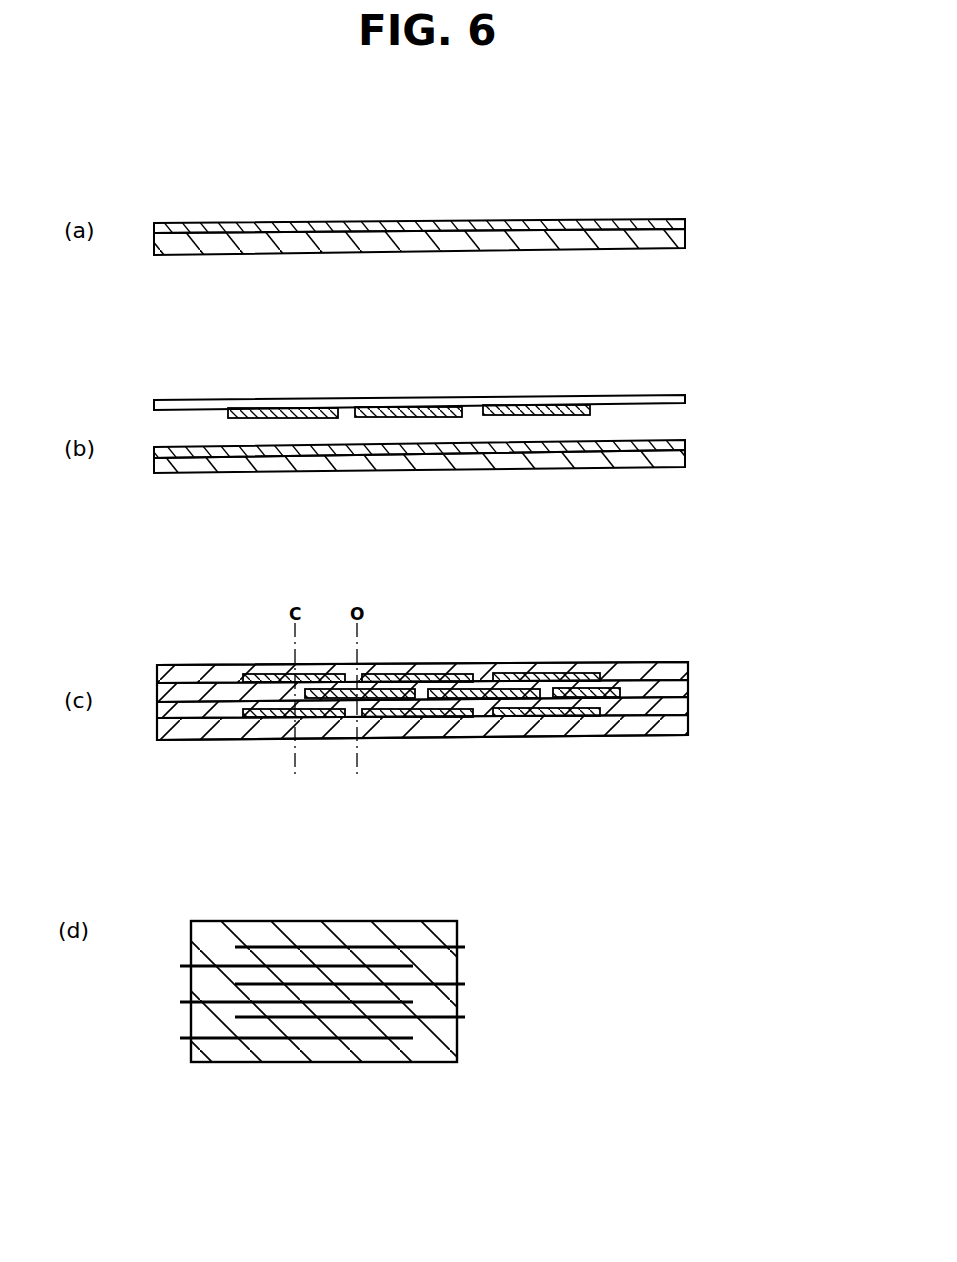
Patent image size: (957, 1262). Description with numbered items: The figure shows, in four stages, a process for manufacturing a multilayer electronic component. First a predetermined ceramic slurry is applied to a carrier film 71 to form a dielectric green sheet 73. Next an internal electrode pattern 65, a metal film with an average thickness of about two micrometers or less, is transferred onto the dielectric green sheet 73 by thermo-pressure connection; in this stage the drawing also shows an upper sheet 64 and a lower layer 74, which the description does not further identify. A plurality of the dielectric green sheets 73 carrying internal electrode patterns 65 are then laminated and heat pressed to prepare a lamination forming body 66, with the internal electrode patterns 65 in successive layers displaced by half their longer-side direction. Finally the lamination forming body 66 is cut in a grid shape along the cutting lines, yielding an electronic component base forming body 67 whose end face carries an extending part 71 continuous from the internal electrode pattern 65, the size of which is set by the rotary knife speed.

The ceramic green sheet 64 is at (690, 397).
The internal electrode pattern 65 is at (350, 406).
The lamination forming body 66 is at (690, 697).
The electronic component base forming body 67 is at (435, 929).
The carrier film 71 is at (688, 236).
The dielectric green sheet 73 is at (687, 222).
The support substrate 74 is at (688, 456).